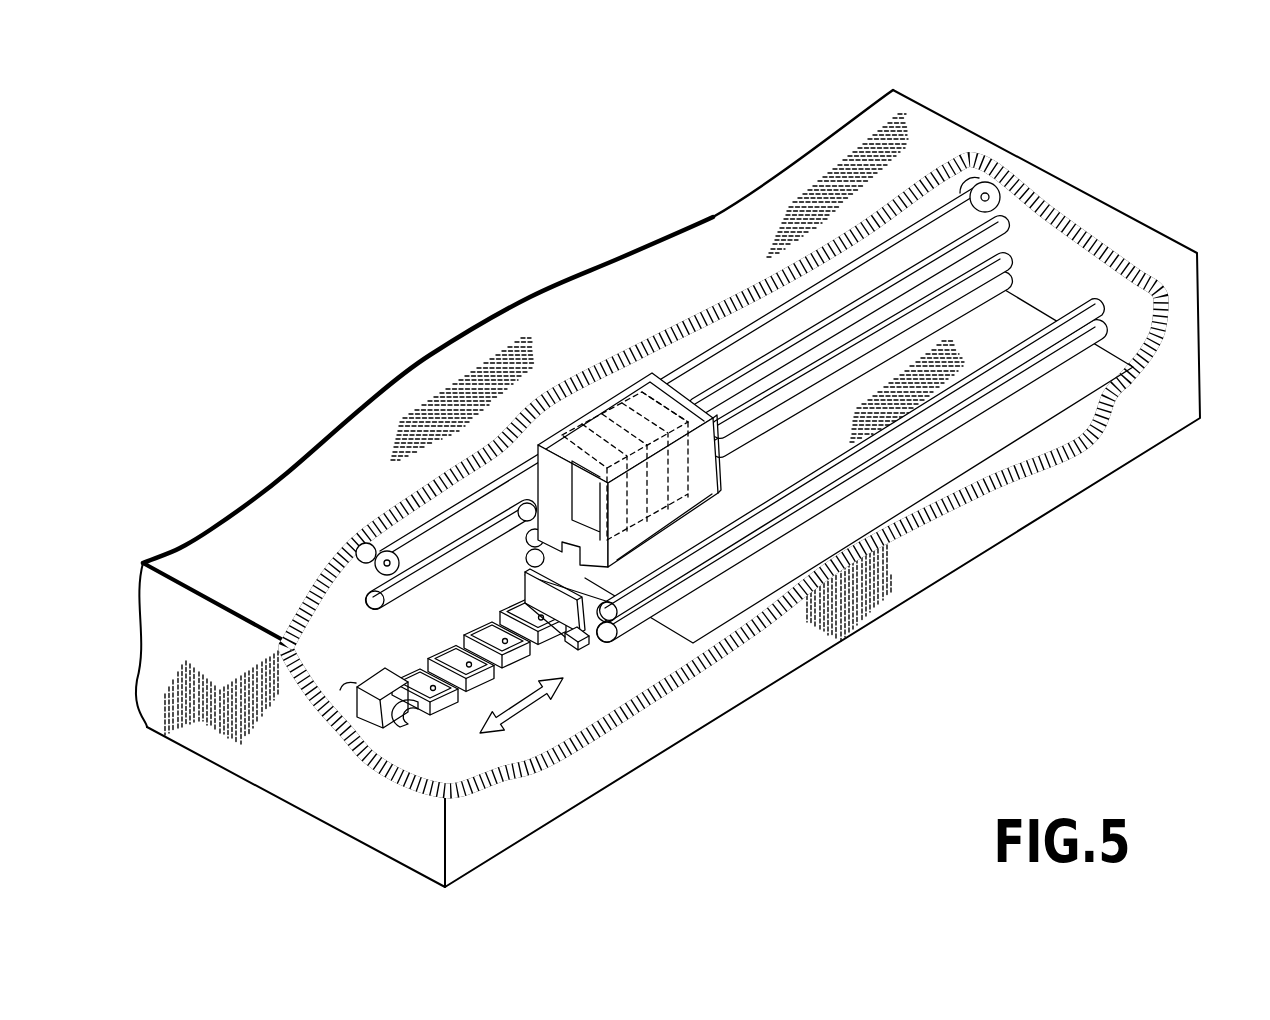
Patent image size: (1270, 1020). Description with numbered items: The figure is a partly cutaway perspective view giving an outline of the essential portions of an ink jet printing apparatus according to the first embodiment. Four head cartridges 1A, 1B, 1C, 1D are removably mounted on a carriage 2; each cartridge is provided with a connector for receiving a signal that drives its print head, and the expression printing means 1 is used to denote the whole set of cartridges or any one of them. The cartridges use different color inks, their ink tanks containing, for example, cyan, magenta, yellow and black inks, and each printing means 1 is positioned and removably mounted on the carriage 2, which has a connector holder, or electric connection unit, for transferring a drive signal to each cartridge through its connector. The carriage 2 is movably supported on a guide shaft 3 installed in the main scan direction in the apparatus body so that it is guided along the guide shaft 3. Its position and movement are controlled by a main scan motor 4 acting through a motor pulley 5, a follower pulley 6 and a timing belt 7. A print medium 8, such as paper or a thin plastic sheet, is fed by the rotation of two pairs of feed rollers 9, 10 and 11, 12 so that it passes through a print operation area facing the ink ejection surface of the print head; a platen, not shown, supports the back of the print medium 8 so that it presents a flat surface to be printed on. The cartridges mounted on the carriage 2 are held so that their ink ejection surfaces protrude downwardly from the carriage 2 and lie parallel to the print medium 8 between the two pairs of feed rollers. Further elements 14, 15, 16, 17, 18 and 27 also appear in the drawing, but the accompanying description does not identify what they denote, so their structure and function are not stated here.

The printing means 1 is at (548, 343).
The head cartridge 1A is at (642, 395).
The head cartridge 1B is at (617, 405).
The head cartridge 1C is at (583, 424).
The head cartridge 1D is at (566, 432).
The carriage 2 is at (537, 470).
The guide shaft 3 is at (1003, 220).
The main scan motor 4 is at (347, 549).
The motor pulley 5 is at (383, 552).
The follower pulley 6 is at (986, 182).
The timing belt 7 is at (772, 310).
The print medium 8 is at (1103, 367).
The feed roller 9 is at (1008, 266).
The feed roller 10 is at (977, 282).
The feed roller 11 is at (1103, 329).
The feed roller 12 is at (1097, 305).
The recovery area 14 is at (470, 748).
The caps 15 is at (420, 666).
The wiper unit 16 is at (368, 712).
The support plate 17 is at (583, 650).
The support block 18 is at (607, 634).
The clip 27 is at (397, 727).